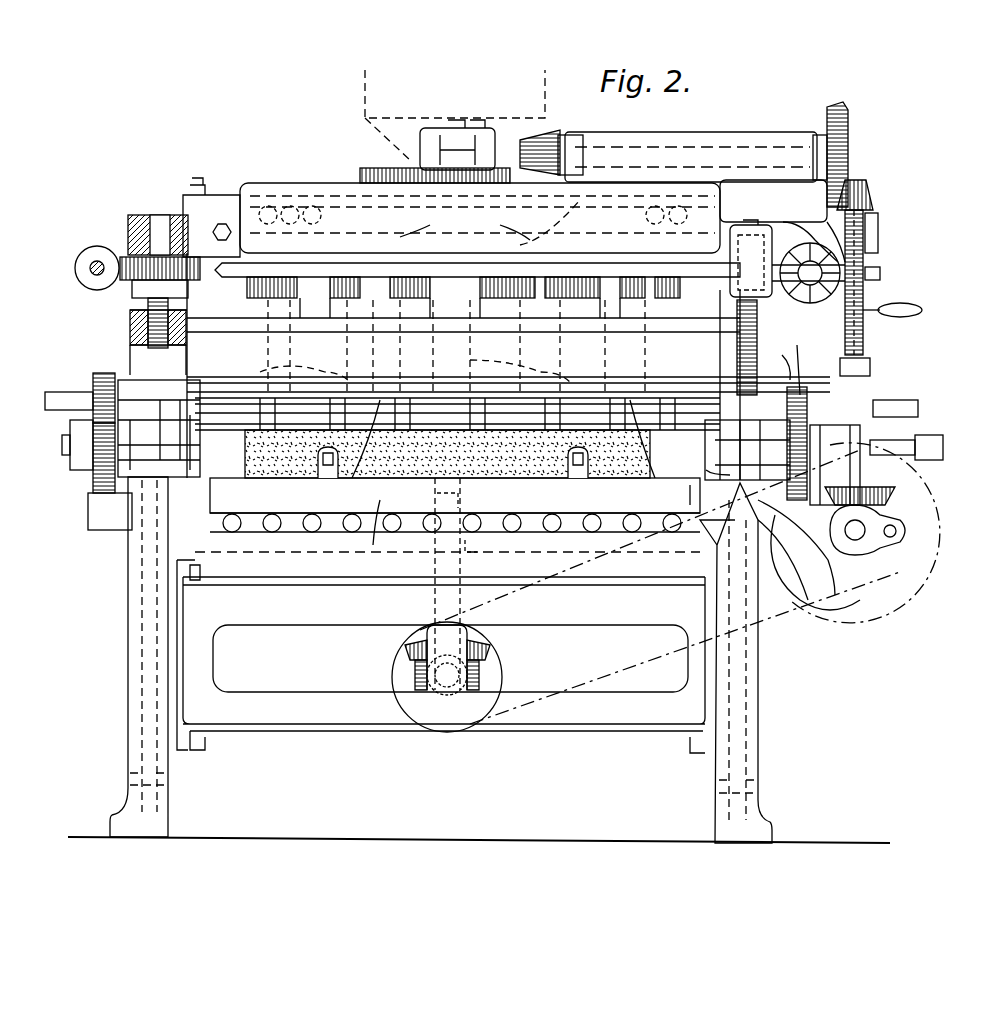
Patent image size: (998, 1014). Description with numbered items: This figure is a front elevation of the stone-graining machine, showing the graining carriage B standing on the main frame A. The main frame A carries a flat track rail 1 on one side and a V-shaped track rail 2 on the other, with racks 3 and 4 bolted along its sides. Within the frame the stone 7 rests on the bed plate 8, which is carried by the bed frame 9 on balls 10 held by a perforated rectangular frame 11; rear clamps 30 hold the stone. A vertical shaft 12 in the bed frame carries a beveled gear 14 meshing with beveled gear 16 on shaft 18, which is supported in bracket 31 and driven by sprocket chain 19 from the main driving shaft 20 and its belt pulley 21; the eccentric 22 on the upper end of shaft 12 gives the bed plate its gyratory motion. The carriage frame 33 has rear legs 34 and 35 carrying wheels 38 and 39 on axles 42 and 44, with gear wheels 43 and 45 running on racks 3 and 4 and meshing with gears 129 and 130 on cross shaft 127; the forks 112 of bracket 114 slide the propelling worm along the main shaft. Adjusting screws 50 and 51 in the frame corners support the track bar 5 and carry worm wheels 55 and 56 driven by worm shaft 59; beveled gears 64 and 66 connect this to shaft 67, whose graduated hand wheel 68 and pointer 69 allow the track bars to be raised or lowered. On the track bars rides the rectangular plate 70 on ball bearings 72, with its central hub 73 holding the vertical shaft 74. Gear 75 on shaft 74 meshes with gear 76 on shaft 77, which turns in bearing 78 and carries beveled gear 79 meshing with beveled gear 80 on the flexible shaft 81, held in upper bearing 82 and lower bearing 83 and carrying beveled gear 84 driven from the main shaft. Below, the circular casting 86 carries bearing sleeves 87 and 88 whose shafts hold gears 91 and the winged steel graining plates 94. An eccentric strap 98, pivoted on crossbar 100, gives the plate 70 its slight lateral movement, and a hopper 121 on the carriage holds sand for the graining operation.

The flat track rail 1 is at (152, 483).
The V-shaped track rail 2 is at (775, 560).
The rack 3 is at (88, 503).
The rack 4 is at (835, 598).
The track bar 5 is at (150, 216).
The stone 7 is at (260, 462).
The bed plate 8 is at (368, 537).
The bed frame 9 is at (314, 580).
The balls 10 is at (305, 532).
The rectangular frame 11 is at (213, 515).
The vertical shaft 12 is at (472, 549).
The beveled gear wheel 14 is at (490, 650).
The beveled gear wheel 16 is at (482, 676).
The shaft 18 is at (425, 672).
The sprocket chain 19 is at (596, 680).
The main driving shaft 20 is at (870, 590).
The belt pulley 21 is at (940, 538).
The eccentric 22 is at (462, 500).
The rear clamp 30 is at (330, 462).
The bracket 31 is at (478, 575).
The carriage frame 33 is at (457, 398).
The rear leg 34 is at (192, 460).
The rear leg 35 is at (710, 425).
The wheel 38 is at (178, 440).
The wheel 39 is at (706, 470).
The axle 42 is at (70, 445).
The gear wheel 43 is at (95, 480).
The axle 44 is at (928, 436).
The gear wheel 45 is at (711, 531).
The adjusting screw 50 is at (148, 310).
The adjusting screw 51 is at (737, 335).
The worm wheel 55 is at (130, 285).
The worm wheel 56 is at (730, 292).
The worm shaft 59 is at (77, 270).
The beveled gear 64 is at (863, 310).
The beveled gear 66 is at (795, 300).
The shaft 67 is at (232, 278).
The graduated hand wheel 68 is at (864, 252).
The pointer 69 is at (800, 238).
The rectangular plate 70 is at (300, 185).
The ball bearings 72 is at (268, 205).
The central hub 73 is at (525, 240).
The vertical shaft 74 is at (404, 240).
The gear wheel 75 is at (372, 170).
The gear 76 is at (538, 132).
The shaft 77 is at (570, 136).
The bearing 78 is at (688, 140).
The beveled gear 79 is at (849, 110).
The beveled gear 80 is at (872, 200).
The extensible flexible shaft 81 is at (868, 363).
The upper bearing 82 is at (880, 228).
The lower bearing 83 is at (808, 440).
The beveled gear wheel 84 is at (896, 496).
The circular casting 86 is at (285, 366).
The bearing sleeve 87 is at (275, 298).
The bearing sleeve 88 is at (295, 310).
The gear wheel 91 is at (335, 300).
The steel plate 94 is at (501, 454).
The eccentric strap 98 is at (564, 215).
The crossbar 100 is at (222, 205).
The fork 112 is at (852, 545).
The bracket 114 is at (862, 465).
The hopper 121 is at (383, 74).
The cross shaft 127 is at (50, 395).
The gear 129 is at (102, 374).
The gear 130 is at (777, 370).
The main frame A is at (318, 725).
The carriage B is at (206, 142).